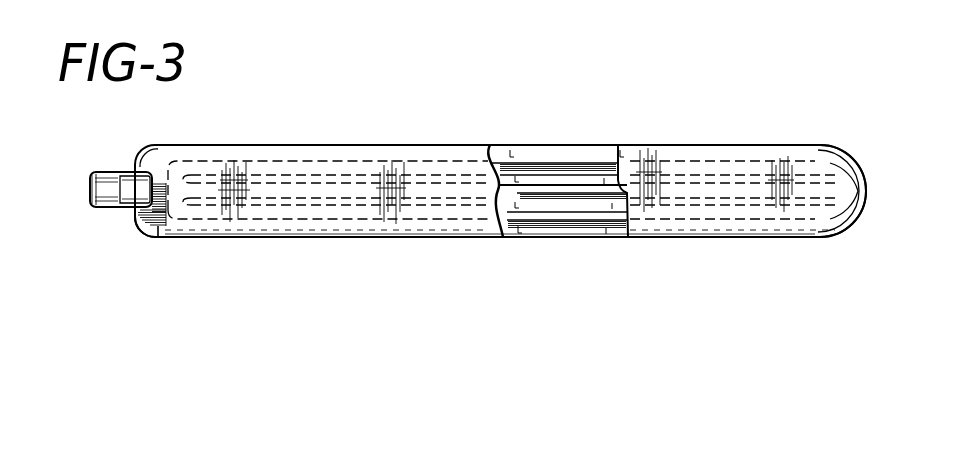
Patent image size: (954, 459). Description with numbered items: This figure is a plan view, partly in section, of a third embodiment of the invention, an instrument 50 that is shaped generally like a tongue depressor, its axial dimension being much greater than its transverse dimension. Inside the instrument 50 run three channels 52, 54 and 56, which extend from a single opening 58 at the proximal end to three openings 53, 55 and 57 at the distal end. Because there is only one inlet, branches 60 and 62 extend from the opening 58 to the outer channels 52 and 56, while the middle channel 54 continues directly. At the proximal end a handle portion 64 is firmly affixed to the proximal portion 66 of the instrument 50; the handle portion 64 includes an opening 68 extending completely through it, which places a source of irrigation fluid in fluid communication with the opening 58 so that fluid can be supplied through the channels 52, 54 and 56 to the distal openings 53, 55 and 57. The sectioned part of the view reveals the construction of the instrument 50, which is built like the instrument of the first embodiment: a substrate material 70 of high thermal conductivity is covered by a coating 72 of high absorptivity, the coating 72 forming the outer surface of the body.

The instrument 50 is at (637, 91).
The first channel 52 is at (531, 170).
The first distal opening 53 is at (840, 179).
The second channel 54 is at (543, 194).
The second distal opening 55 is at (845, 197).
The third channel 56 is at (552, 213).
The third distal opening 57 is at (843, 215).
The proximal opening 58 is at (155, 188).
The first branch 60 is at (180, 170).
The second branch 62 is at (177, 205).
The handle portion 64 is at (118, 208).
The proximal portion 66 is at (158, 236).
The handle opening 68 is at (91, 188).
The substrate material 70 is at (573, 152).
The coating 72 is at (718, 226).